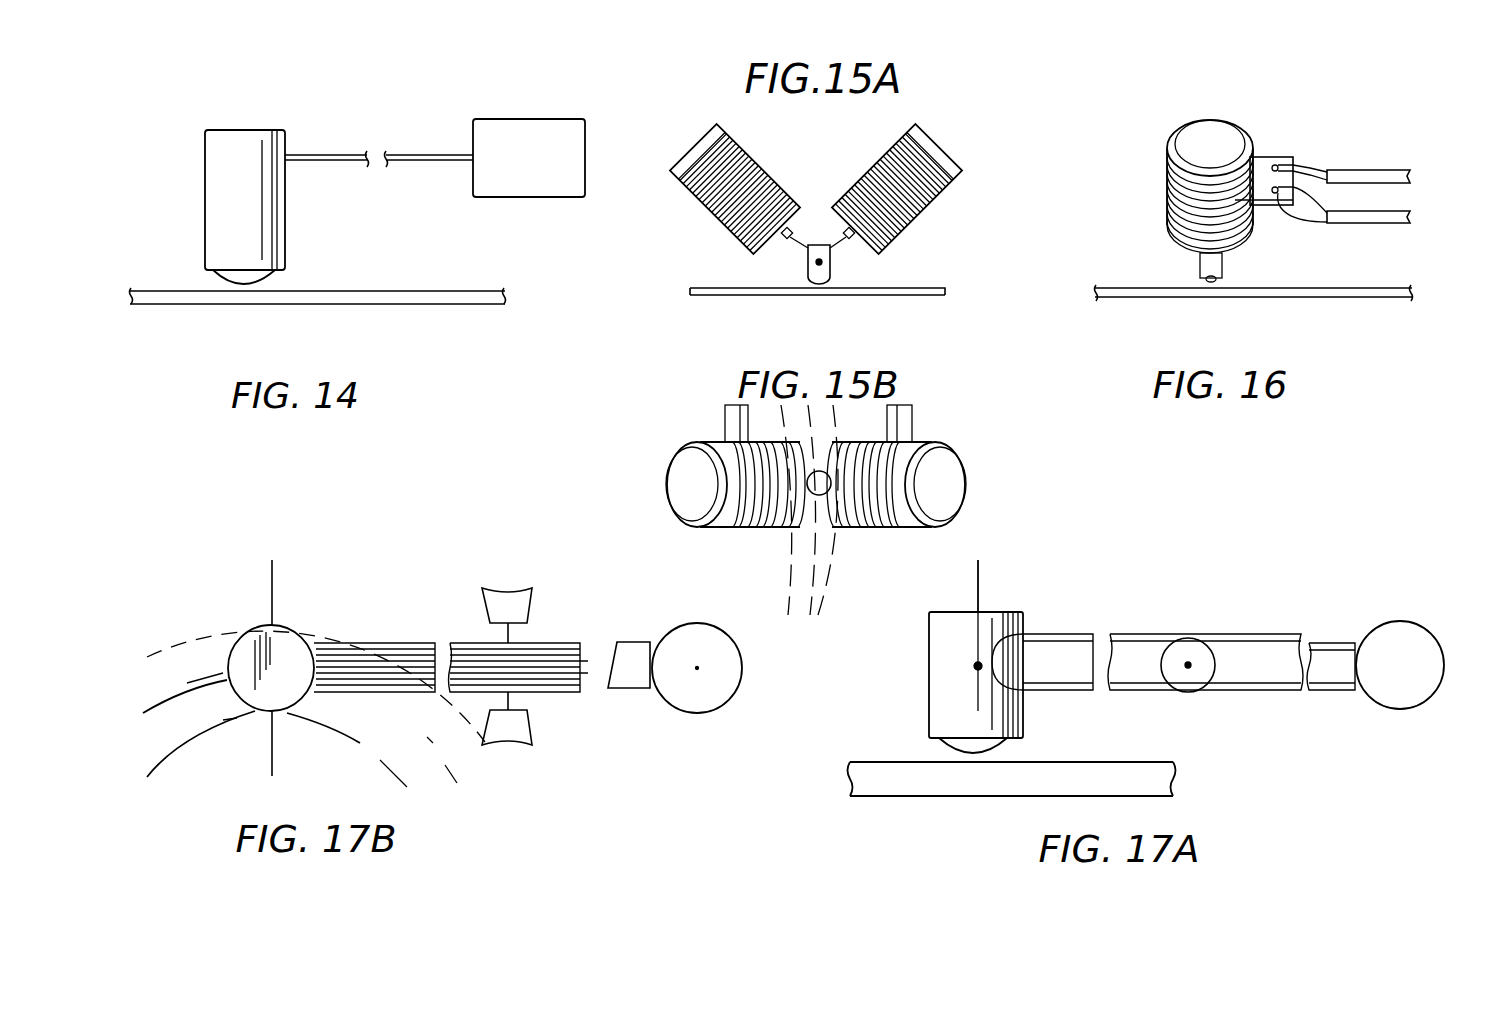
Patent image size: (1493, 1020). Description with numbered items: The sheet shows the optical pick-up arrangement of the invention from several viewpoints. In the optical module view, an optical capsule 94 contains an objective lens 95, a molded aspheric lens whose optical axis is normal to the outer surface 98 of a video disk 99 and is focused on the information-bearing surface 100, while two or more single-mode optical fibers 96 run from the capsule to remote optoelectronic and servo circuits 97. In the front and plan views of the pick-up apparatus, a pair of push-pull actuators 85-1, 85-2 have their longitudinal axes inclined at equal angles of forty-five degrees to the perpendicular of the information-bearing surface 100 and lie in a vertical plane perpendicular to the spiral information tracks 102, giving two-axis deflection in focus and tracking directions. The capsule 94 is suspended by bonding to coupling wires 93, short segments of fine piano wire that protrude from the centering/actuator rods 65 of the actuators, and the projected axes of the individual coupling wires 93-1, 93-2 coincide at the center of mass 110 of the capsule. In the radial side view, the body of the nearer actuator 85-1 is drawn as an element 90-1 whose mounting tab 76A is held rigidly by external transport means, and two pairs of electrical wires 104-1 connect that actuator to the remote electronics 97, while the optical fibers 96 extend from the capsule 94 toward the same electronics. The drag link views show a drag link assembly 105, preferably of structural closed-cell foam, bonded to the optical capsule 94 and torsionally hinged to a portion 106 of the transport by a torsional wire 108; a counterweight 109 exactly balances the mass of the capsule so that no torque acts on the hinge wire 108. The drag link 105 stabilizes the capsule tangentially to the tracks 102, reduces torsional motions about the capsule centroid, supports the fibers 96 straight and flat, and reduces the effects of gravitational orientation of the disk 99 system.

In FIG. 15A, the centering/actuator rod 65 is at (812, 212).
In FIG. 16, the mounting tab 76A is at (1287, 157).
In FIG. 15A, the push-pull actuator 85-1 is at (697, 140).
In FIG. 15B, the push-pull actuator 85-1 is at (660, 452).
In FIG. 16, the push-pull actuator 85-1 is at (1283, 179).
In FIG. 15A, the push-pull actuator 85-2 is at (948, 146).
In FIG. 15B, the push-pull actuator 85-2 is at (960, 450).
In FIG. 16, the coil 90-1 is at (1192, 137).
In FIG. 15A, the coupling wire 93 is at (812, 252).
In FIG. 17B, the coupling wire 93-1 is at (272, 758).
In FIG. 17A, the coupling wire 93-1 is at (979, 585).
In FIG. 17B, the coupling wire 93-2 is at (272, 585).
In FIG. 14, the optical capsule 94 is at (286, 211).
In FIG. 15A, the optical capsule 94 is at (755, 291).
In FIG. 15B, the optical capsule 94 is at (820, 471).
In FIG. 16, the optical capsule 94 is at (1199, 268).
In FIG. 17B, the optical capsule 94 is at (296, 628).
In FIG. 17A, the optical capsule 94 is at (929, 648).
In FIG. 14, the objective lens 95 is at (268, 279).
In FIG. 14, the single-mode optical fibers 96 is at (341, 154).
In FIG. 16, the single-mode optical fibers 96 is at (1336, 223).
In FIG. 14, the remote optoelectronic and servo circuits 97 is at (530, 119).
In FIG. 14, the outer surface 98 is at (462, 290).
In FIG. 15A, the outer surface 98 is at (897, 289).
In FIG. 17A, the outer surface 98 is at (882, 762).
In FIG. 14, the video disk 99 is at (324, 286).
In FIG. 15A, the video disk 99 is at (838, 278).
In FIG. 16, the video disk 99 is at (1345, 318).
In FIG. 17A, the video disk 99 is at (1012, 773).
In FIG. 14, the information-bearing surface 100 is at (388, 305).
In FIG. 15A, the information-bearing surface 100 is at (843, 296).
In FIG. 17A, the information-bearing surface 100 is at (1003, 797).
In FIG. 15B, the spiral information tracks 102 is at (793, 536).
In FIG. 17B, the spiral information tracks 102 is at (215, 672).
In FIG. 16, the electrical wires 104-1 is at (1397, 214).
In FIG. 17B, the drag link assembly 105 is at (467, 627).
In FIG. 17A, the drag link assembly 105 is at (1173, 647).
In FIG. 17B, the portion of the transport 106 is at (530, 598).
In FIG. 17A, the portion of the transport 106 is at (1174, 683).
In FIG. 17B, the torsional wire 108 is at (512, 634).
In FIG. 17A, the torsional wire 108 is at (1186, 668).
In FIG. 17B, the counterweight 109 is at (707, 640).
In FIG. 17A, the counterweight 109 is at (1398, 625).
In FIG. 15A, the center of mass 110 is at (816, 266).